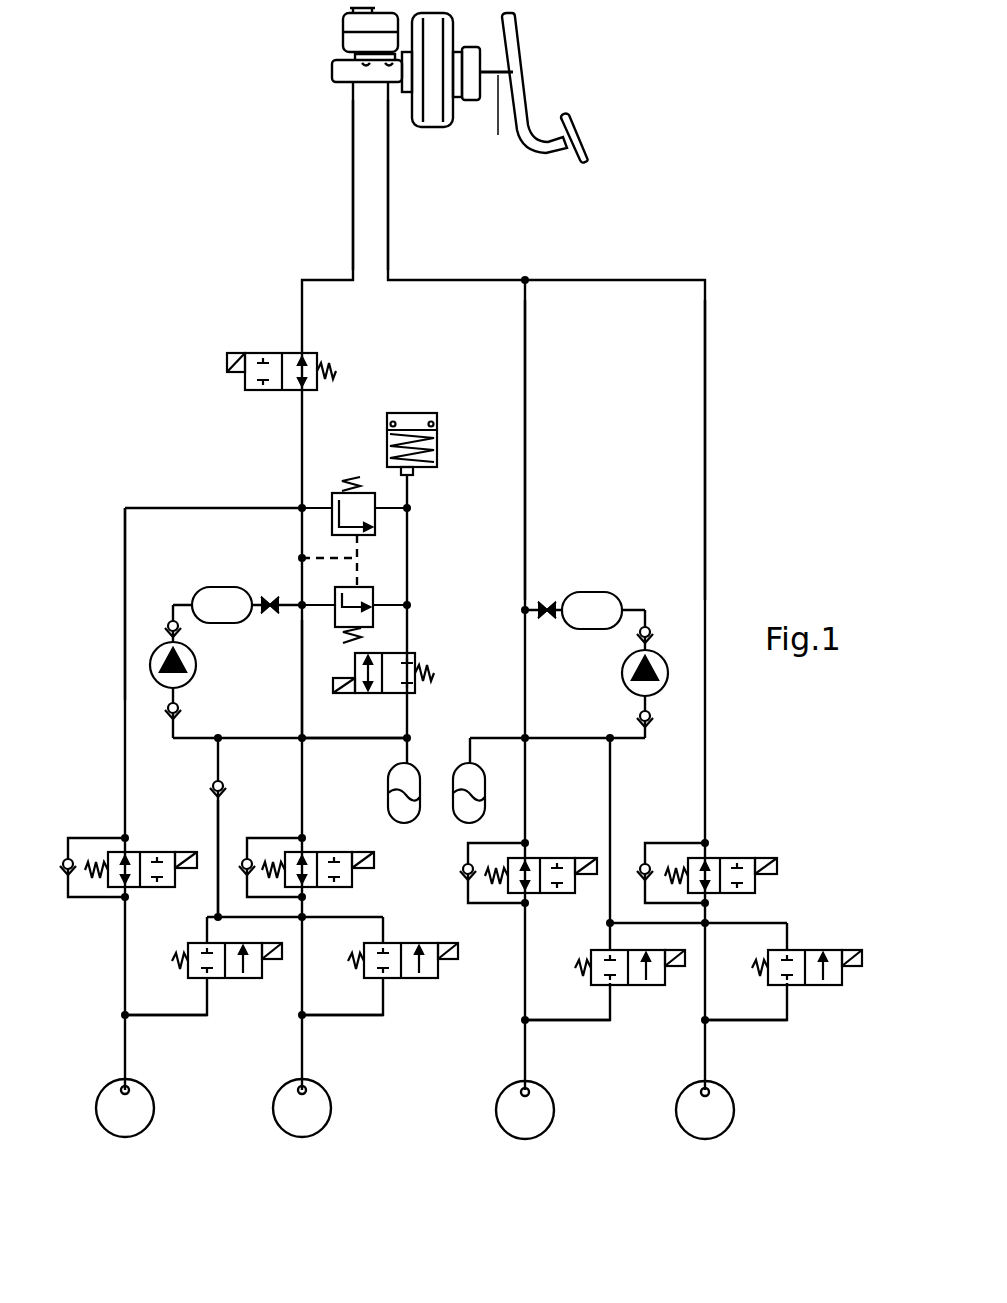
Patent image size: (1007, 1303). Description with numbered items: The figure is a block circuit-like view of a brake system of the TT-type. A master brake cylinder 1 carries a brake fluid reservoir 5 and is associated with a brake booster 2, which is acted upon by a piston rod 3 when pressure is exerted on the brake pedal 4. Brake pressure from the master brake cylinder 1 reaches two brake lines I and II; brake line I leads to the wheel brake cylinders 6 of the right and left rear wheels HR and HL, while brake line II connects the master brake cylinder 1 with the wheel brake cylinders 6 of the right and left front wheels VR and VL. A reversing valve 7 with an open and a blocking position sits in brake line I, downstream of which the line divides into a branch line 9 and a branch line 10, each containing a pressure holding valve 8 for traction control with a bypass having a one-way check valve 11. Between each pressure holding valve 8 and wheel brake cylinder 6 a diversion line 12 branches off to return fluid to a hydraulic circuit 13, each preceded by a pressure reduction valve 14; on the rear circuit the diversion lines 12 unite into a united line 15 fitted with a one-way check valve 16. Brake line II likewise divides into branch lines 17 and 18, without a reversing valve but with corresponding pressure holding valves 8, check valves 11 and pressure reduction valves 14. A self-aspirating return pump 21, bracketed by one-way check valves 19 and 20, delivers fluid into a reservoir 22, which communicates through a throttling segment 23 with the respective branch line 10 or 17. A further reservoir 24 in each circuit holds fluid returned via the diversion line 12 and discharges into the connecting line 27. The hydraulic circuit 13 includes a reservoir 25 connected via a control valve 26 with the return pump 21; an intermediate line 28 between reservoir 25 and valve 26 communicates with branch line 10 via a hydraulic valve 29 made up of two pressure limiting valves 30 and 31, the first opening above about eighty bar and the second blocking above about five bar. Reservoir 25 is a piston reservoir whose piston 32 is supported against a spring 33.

The master brake cylinder 1 is at (340, 72).
The brake booster 2 is at (432, 123).
The piston rod 3 is at (496, 119).
The brake pedal 4 is at (527, 87).
The reservoir 5 is at (342, 22).
The wheel brake cylinder 6 is at (140, 1080).
The reversing valve 7 is at (303, 352).
The pressure holding valve 8 is at (133, 850).
The branch line 9 is at (125, 628).
The branch line 10 is at (301, 665).
The one-way check valve 11 is at (63, 857).
The diversion line 12 is at (197, 1017).
The hydraulic circuit 13 is at (430, 556).
The pressure reduction valve 14 is at (223, 980).
The united line 15 is at (220, 810).
The one-way check valve 16 is at (212, 783).
The branch line 17 is at (526, 447).
The branch line 18 is at (705, 445).
The one-way check valve 19 is at (167, 712).
The one-way check valve 20 is at (170, 620).
The self-aspirating return pump 21 is at (180, 673).
The reservoir 22 is at (217, 592).
The throttling segment 23 is at (270, 598).
The reservoir 24 is at (390, 790).
The reservoir 25 is at (435, 442).
The control valve 26 is at (410, 652).
The connecting line 27 is at (323, 738).
The intermediate line 28 is at (408, 582).
The hydraulic valve 29 is at (392, 542).
The pressure limiting valve 30 is at (338, 488).
The pressure limiting valve 31 is at (345, 620).
The piston 32 is at (410, 423).
The spring 33 is at (417, 466).
The brake line I is at (353, 192).
The brake line II is at (388, 197).